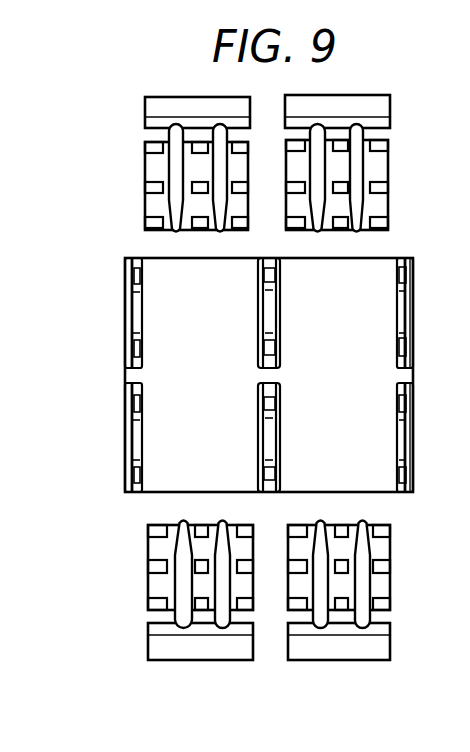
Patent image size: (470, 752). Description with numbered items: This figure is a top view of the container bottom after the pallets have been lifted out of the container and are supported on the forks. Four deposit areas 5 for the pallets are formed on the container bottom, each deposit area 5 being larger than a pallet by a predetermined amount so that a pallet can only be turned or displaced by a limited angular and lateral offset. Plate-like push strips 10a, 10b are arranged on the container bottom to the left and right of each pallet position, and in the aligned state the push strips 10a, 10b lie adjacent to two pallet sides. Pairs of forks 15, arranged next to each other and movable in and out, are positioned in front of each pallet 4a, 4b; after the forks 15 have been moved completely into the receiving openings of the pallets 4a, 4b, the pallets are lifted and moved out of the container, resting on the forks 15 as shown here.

The pallet 4a is at (148, 150).
The pallet 4b is at (382, 220).
The forks 15 is at (365, 167).
The push strip 10a is at (132, 310).
The push strip 10b is at (258, 308).
The deposit area 5 is at (160, 358).